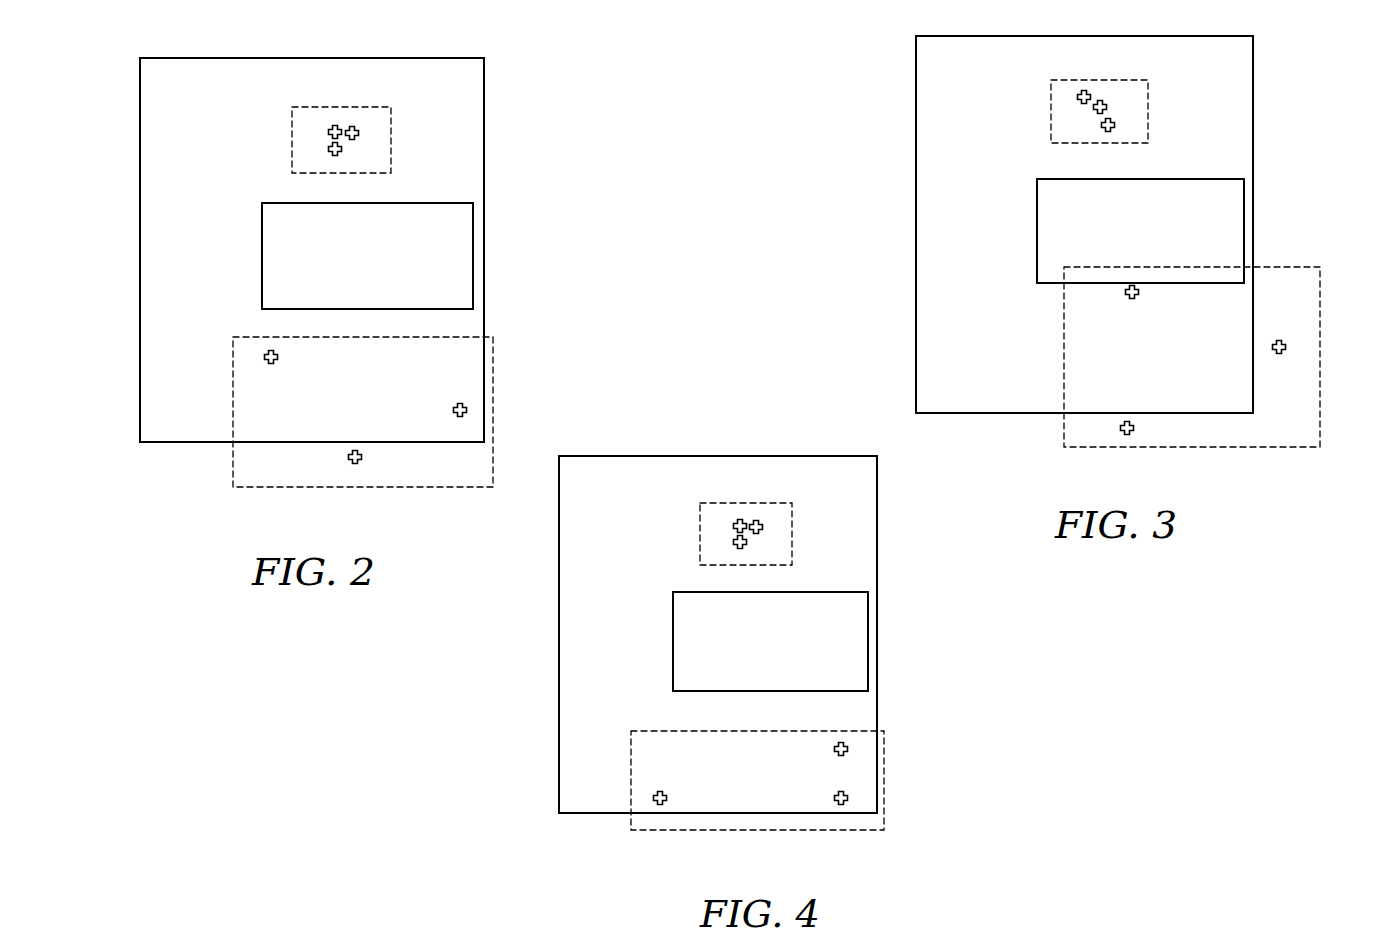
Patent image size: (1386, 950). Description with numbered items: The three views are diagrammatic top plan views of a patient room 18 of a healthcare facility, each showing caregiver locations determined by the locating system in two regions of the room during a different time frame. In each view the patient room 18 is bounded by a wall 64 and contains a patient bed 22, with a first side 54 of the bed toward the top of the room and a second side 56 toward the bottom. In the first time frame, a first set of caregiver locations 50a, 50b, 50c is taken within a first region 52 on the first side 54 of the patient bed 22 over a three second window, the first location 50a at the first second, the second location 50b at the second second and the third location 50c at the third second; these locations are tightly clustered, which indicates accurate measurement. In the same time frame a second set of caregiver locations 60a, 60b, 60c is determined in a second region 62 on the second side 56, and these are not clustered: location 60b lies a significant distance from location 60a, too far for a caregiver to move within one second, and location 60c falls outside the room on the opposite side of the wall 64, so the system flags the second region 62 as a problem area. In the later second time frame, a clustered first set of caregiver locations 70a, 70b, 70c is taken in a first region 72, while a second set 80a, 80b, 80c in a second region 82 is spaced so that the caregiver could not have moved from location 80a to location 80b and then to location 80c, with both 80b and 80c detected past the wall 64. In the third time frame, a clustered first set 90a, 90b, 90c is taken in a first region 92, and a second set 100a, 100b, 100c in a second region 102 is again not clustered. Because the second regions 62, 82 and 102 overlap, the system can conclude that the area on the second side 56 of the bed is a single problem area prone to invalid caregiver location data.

In FIG. 2, the patient room 18 is at (443, 116).
In FIG. 3, the patient room 18 is at (1232, 72).
In FIG. 4, the patient room 18 is at (858, 540).
In FIG. 2, the patient bed 22 is at (443, 263).
In FIG. 3, the patient bed 22 is at (1222, 225).
In FIG. 4, the patient bed 22 is at (855, 650).
In FIG. 2, the first location 50a is at (335, 125).
In FIG. 2, the second location 50b is at (352, 126).
In FIG. 2, the third location 50c is at (343, 151).
In FIG. 2, the first region 52 is at (297, 130).
In FIG. 2, the first side 54 is at (232, 151).
In FIG. 3, the first side 54 is at (965, 113).
In FIG. 4, the first side 54 is at (610, 518).
In FIG. 2, the second side 56 is at (275, 322).
In FIG. 3, the second side 56 is at (967, 341).
In FIG. 4, the second side 56 is at (610, 767).
In FIG. 2, the caregiver location 60a is at (278, 358).
In FIG. 2, the caregiver location 60b is at (454, 409).
In FIG. 2, the caregiver location 60c is at (362, 459).
In FIG. 2, the second region 62 is at (433, 355).
In FIG. 2, the wall 64 is at (188, 443).
In FIG. 3, the wall 64 is at (991, 415).
In FIG. 3, the caregiver location 70a is at (1084, 90).
In FIG. 3, the caregiver location 70b is at (1105, 101).
In FIG. 3, the caregiver location 70c is at (1114, 121).
In FIG. 3, the first region 72 is at (1060, 92).
In FIG. 3, the caregiver location 80a is at (1132, 300).
In FIG. 3, the caregiver location 80b is at (1279, 355).
In FIG. 3, the caregiver location 80c is at (1135, 428).
In FIG. 3, the second region 82 is at (1283, 294).
In FIG. 4, the caregiver location 90a is at (740, 519).
In FIG. 4, the caregiver location 90b is at (762, 533).
In FIG. 4, the caregiver location 90c is at (731, 545).
In FIG. 4, the first region 92 is at (780, 520).
In FIG. 4, the caregiver location 100a is at (848, 752).
In FIG. 4, the caregiver location 100b is at (668, 798).
In FIG. 4, the caregiver location 100c is at (848, 800).
In FIG. 4, the second region 102 is at (847, 737).